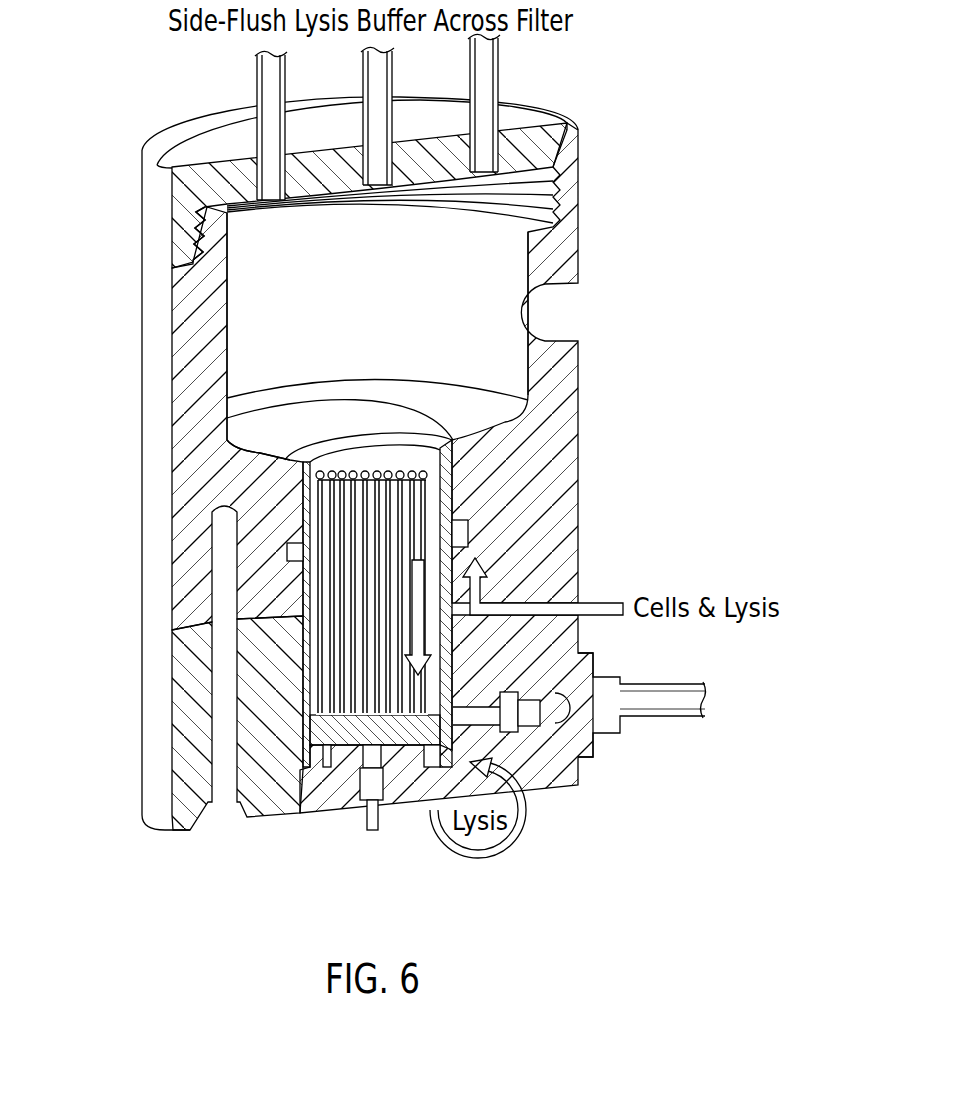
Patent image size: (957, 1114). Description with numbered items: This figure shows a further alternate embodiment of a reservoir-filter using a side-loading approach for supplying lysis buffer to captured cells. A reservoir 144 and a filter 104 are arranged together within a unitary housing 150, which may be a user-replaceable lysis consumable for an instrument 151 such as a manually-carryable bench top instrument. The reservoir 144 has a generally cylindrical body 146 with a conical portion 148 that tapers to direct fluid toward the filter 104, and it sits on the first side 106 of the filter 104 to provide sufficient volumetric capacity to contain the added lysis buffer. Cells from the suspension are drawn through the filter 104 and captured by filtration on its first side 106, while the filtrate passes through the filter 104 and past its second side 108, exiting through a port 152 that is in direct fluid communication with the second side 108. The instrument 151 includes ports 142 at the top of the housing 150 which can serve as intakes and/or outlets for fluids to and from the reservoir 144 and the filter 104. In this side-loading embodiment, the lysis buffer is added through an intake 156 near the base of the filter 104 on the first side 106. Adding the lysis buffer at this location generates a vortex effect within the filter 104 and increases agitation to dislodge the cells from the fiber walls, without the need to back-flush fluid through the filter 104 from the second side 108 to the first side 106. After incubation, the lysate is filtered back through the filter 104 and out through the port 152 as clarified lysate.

The filter 104 is at (282, 556).
The first side 106 is at (317, 708).
The second side 108 is at (340, 755).
The ports 142 is at (240, 205).
The reservoir 144 is at (247, 331).
The cylindrical body 146 is at (275, 360).
The conical portion 148 is at (252, 433).
The unitary housing 150 is at (345, 181).
The instrument 151 is at (562, 503).
The port 152 is at (378, 753).
The intake 156 is at (592, 668).